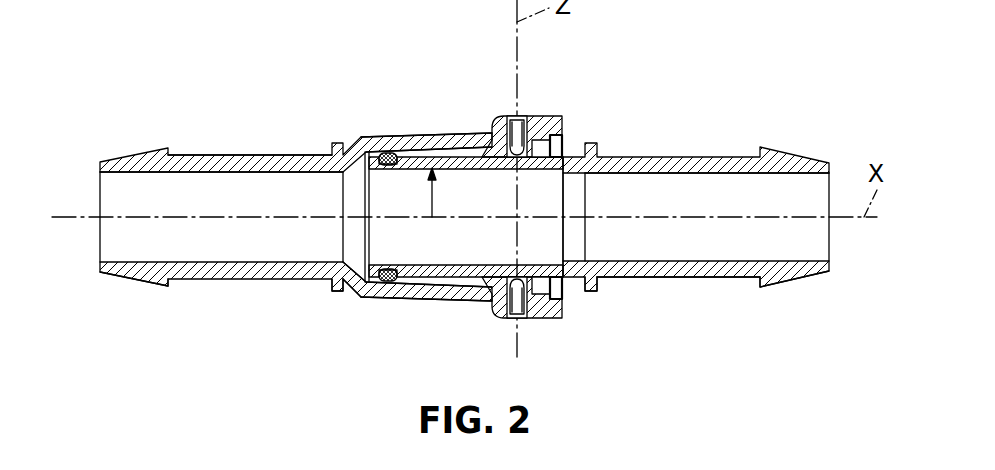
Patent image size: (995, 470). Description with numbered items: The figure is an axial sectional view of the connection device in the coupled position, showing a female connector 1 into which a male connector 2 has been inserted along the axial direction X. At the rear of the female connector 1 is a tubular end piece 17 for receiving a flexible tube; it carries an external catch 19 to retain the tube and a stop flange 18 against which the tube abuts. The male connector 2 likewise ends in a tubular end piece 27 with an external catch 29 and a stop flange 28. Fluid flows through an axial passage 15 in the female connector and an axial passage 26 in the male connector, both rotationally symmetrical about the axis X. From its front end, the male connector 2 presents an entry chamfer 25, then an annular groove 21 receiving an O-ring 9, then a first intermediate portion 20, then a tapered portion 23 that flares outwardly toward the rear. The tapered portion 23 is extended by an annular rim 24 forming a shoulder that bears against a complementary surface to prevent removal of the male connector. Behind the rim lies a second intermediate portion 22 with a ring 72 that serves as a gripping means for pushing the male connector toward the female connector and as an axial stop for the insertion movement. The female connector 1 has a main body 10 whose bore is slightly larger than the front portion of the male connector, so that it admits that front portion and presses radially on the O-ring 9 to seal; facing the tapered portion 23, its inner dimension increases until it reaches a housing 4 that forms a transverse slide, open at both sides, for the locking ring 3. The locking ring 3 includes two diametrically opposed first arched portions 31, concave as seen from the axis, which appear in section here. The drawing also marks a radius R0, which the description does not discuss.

The female connector 1 is at (257, 145).
The male connector 2 is at (675, 145).
The locking ring 3 is at (536, 313).
The housing forming a slide 4 is at (508, 316).
The O-ring 9 is at (392, 283).
The main body 10 is at (379, 154).
The axial passage 15 is at (271, 185).
The tubular end piece 17 is at (212, 155).
The stop flange 18 is at (331, 291).
The external catches 19 is at (155, 284).
The first intermediate portion 20 is at (447, 290).
The annular groove 21 is at (394, 150).
The second intermediate portion 22 is at (540, 158).
The tapered portion 23 is at (493, 137).
The annular rim 24 is at (512, 135).
The entry chamfer 25 is at (362, 297).
The axial passage 26 is at (708, 183).
The tubular end piece 27 is at (688, 280).
The stop flange 28 is at (597, 291).
The external catches 29 is at (773, 288).
The first arched portions 31 is at (512, 160).
The ring 72 is at (566, 140).
The inner radius R0 is at (415, 192).